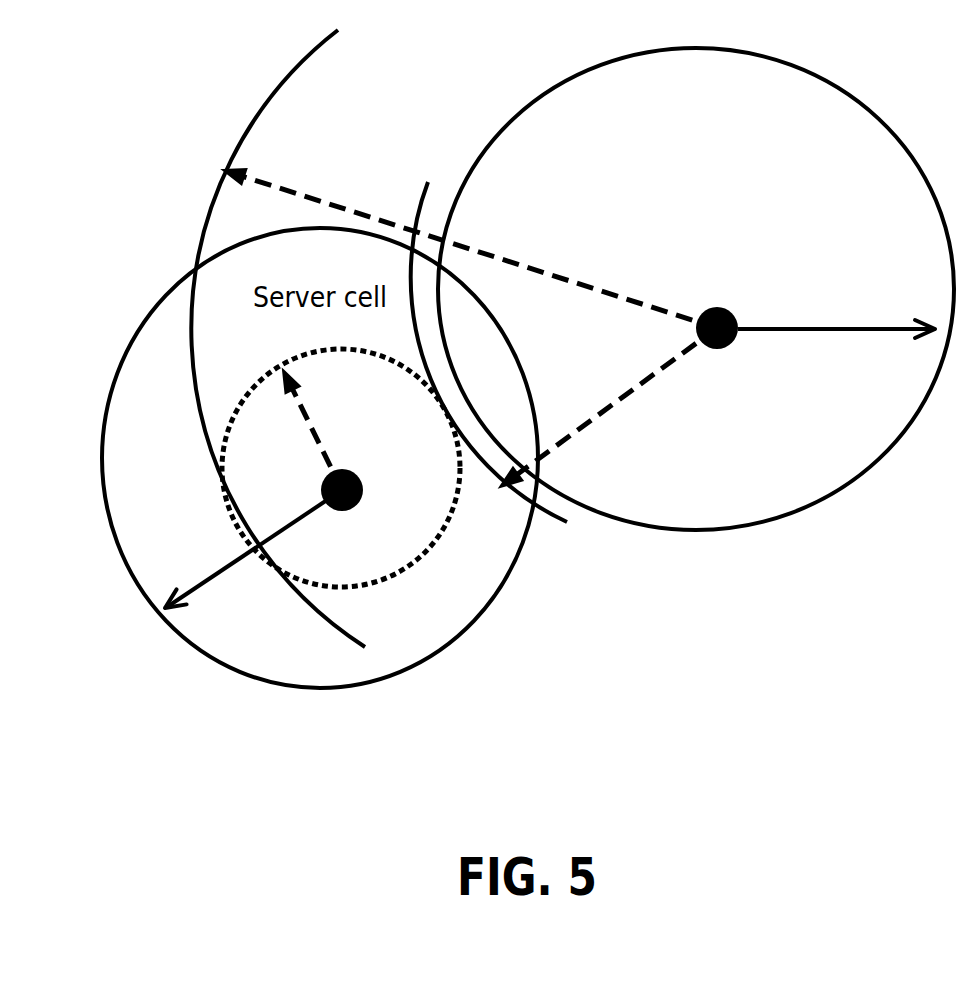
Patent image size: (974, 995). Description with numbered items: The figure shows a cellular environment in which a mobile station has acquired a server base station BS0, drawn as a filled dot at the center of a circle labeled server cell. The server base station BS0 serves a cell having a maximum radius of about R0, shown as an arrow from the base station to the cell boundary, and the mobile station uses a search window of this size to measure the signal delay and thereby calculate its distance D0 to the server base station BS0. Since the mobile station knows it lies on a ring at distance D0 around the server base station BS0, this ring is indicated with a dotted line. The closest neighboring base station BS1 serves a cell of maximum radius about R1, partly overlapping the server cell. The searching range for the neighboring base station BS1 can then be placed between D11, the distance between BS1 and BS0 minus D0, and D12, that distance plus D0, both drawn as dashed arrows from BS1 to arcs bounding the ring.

The server base station BS0 is at (369, 479).
The neighboring base station BS1 is at (727, 306).
The maximum radius of the server cell R0 is at (253, 549).
The maximum radius of the neighboring cell R1 is at (836, 311).
The distance to the server base station D0 is at (308, 430).
The lower limit of the searching range D11 is at (608, 407).
The upper limit of the searching range D12 is at (470, 248).